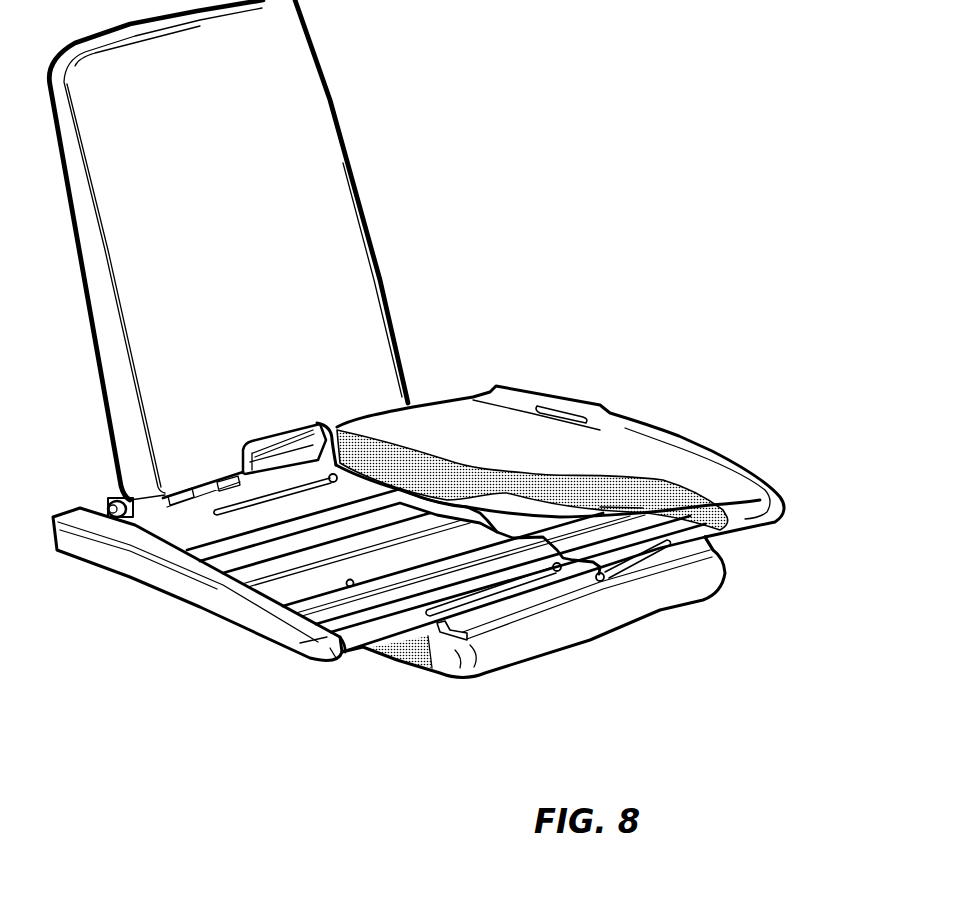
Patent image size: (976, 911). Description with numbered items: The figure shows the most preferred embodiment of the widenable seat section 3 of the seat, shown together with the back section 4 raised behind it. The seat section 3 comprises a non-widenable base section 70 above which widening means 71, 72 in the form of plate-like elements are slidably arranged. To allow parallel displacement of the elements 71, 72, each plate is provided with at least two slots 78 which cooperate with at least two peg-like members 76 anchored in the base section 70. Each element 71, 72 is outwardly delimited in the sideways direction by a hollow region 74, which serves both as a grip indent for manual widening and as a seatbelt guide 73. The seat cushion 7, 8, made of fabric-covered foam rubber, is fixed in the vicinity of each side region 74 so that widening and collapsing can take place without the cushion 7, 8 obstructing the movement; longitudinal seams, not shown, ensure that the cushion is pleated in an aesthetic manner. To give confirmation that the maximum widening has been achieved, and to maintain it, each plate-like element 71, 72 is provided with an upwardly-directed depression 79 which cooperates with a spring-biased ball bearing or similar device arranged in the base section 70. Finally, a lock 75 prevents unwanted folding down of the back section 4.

The seat section 3 is at (654, 356).
The back section 4 is at (325, 148).
The seat cushion 7 is at (455, 425).
The seat cushion 8 is at (385, 462).
The base section 70 is at (553, 633).
The widening means 71 is at (360, 628).
The widening means 72 is at (712, 550).
The seatbelt guide 73 is at (547, 410).
The hollow region 74 is at (162, 583).
The lock 75 is at (247, 457).
The peg-like member 76 is at (578, 573).
The slot 78 is at (490, 593).
The depression 79 is at (345, 584).